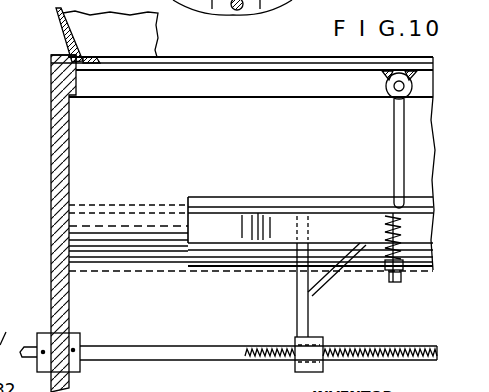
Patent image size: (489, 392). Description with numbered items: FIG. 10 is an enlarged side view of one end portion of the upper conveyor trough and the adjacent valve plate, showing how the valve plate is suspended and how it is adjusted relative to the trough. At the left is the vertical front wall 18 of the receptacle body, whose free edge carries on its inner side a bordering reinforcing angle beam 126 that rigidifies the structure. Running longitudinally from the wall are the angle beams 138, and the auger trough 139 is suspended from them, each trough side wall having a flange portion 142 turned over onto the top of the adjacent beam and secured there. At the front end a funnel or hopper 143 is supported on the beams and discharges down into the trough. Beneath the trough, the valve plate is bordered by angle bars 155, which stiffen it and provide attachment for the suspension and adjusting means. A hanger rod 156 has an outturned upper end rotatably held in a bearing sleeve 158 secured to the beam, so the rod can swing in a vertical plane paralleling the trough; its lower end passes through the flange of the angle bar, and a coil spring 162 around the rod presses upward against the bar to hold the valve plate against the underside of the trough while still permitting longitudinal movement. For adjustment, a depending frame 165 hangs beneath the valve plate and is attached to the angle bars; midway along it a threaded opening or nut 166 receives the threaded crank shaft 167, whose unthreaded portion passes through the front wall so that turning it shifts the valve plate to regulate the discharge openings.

The front wall 18 is at (57, 157).
The bordering reinforcing angle beams 126 is at (72, 88).
The longitudinally extending angle beams 138 is at (242, 88).
The auger trough 139 is at (156, 238).
The flange portion 142 is at (247, 60).
The funnel or hopper 143 is at (63, 32).
The angle bars 155 is at (267, 203).
The hanger rods 156 is at (394, 140).
The bearing sleeves 158 is at (388, 93).
The coil springs 162 is at (384, 232).
The depending frame 165 is at (297, 308).
The threaded opening or nut 166 is at (327, 342).
The threaded crank shaft 167 is at (176, 356).